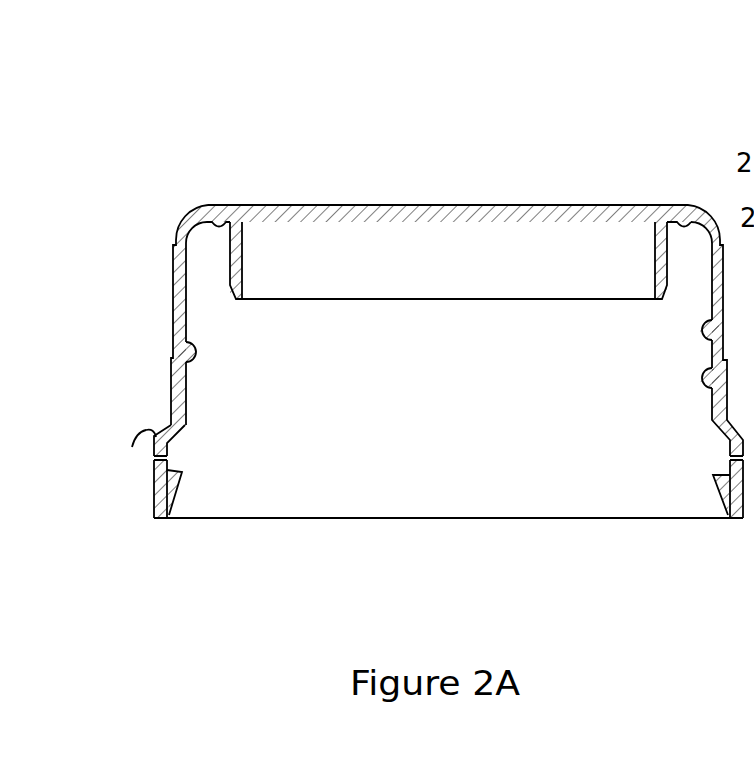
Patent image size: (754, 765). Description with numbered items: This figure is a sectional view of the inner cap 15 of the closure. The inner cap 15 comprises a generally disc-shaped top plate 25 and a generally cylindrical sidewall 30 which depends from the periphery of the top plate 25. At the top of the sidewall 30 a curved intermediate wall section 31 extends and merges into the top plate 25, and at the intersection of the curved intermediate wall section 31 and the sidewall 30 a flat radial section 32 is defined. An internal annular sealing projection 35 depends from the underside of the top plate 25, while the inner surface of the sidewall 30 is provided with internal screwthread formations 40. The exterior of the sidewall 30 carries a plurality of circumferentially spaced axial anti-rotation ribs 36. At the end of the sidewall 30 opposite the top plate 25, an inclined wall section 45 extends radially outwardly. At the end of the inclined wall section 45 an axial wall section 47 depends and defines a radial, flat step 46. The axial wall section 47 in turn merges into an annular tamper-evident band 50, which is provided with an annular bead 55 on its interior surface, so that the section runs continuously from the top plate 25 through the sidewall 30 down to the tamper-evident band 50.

The inner cap 15 is at (448, 276).
The top plate 25 is at (449, 166).
The curved intermediate wall section 31 is at (175, 175).
The flat radial section 32 is at (131, 201).
The sidewall 30 is at (132, 334).
The internal annular sealing projection 35 is at (448, 297).
The axial anti-rotation ribs 36 is at (149, 360).
The internal screwthread formations 40 is at (667, 386).
The inclined wall section 45 is at (131, 414).
The radial flat step 46 is at (93, 432).
The axial wall section 47 is at (119, 466).
The annular tamper-evident band 50 is at (120, 489).
The annular bead 55 is at (676, 495).